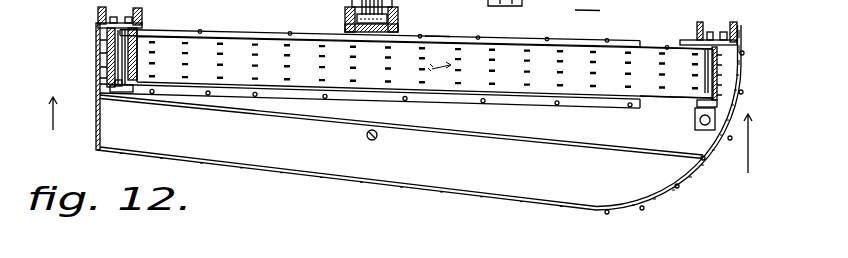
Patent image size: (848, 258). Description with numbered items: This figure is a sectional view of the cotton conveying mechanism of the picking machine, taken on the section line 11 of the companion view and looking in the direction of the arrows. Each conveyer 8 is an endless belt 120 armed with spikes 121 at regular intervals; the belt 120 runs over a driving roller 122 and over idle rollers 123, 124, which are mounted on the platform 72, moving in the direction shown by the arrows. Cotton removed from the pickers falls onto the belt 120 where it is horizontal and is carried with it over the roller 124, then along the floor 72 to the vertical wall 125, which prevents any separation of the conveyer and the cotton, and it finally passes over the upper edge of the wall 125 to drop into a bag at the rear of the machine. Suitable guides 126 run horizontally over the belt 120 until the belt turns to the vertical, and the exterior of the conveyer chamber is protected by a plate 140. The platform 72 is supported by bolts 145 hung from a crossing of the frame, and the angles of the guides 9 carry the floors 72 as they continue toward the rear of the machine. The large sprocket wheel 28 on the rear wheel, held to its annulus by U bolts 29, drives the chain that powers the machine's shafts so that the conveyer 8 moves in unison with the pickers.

The conveyer 8 is at (425, 64).
The guides 9 is at (688, 184).
The section line 11— 11 is at (90, 83).
The sprocket wheel 28 is at (350, 16).
The U bolts 29 is at (512, 10).
The platform 72 is at (588, 7).
The endless belt 120 is at (643, 60).
The spikes 121 is at (691, 52).
The driving roller 122 is at (117, 33).
The idle roller 123 is at (113, 105).
The idle roller 124 is at (679, 123).
The vertical wall 125 is at (90, 47).
The guides 126 is at (164, 34).
The plate 140 is at (440, 29).
The bolts 145 is at (377, 139).